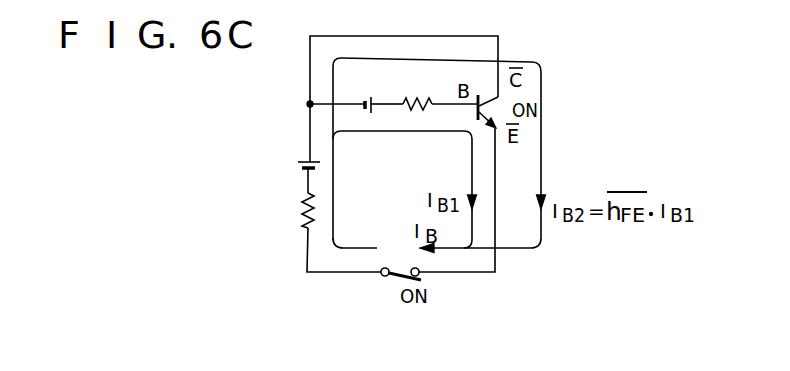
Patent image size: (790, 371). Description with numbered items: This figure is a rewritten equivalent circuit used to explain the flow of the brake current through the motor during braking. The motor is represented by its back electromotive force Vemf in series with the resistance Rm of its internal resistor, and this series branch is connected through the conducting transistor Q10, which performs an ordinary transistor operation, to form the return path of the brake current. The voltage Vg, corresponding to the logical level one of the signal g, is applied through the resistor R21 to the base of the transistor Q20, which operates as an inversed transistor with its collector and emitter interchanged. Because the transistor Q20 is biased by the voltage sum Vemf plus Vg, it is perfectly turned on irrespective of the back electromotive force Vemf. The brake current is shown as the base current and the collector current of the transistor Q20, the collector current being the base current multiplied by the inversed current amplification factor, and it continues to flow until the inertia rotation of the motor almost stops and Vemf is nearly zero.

The transistor Q20 is at (502, 97).
The transistor Q10 is at (383, 277).
The resistor R21 is at (408, 102).
The voltage Vg is at (368, 98).
The back electromotive force Vemf is at (300, 166).
The internal resistance of the motor Rm is at (305, 204).